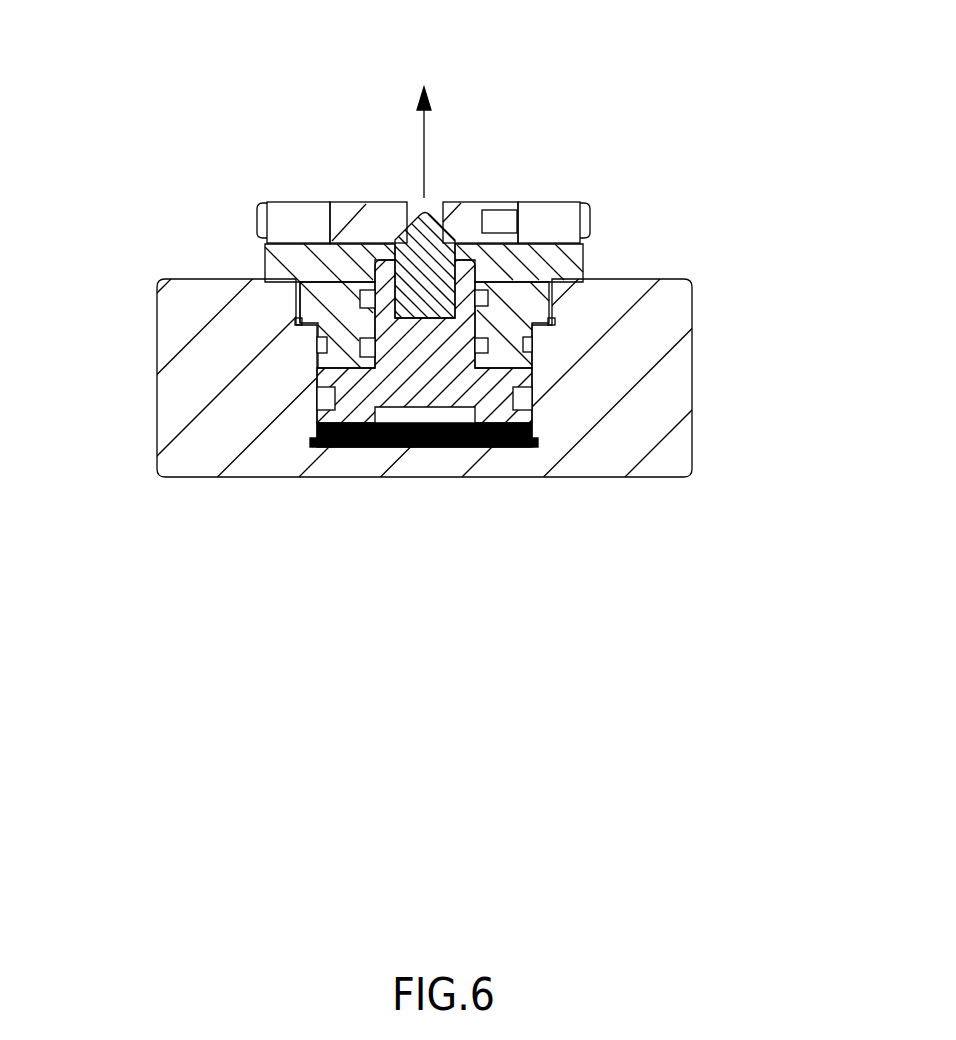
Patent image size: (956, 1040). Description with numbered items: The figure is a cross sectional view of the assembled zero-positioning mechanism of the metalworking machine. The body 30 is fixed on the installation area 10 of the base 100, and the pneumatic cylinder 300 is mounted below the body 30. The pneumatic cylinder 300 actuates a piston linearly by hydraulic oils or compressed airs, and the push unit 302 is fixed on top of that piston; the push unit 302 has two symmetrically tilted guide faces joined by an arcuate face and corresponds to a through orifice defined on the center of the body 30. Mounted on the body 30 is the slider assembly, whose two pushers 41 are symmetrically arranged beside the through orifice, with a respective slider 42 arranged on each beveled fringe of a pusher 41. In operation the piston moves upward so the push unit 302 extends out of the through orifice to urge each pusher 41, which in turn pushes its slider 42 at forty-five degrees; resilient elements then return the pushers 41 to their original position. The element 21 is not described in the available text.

The base 100 is at (673, 330).
The installation area 10 is at (551, 293).
The pad plate 21 is at (344, 445).
The body 30 is at (285, 257).
The pneumatic cylinder 300 is at (305, 307).
The push unit 302 is at (432, 233).
The pusher 41 is at (367, 207).
The slider 42 is at (287, 207).